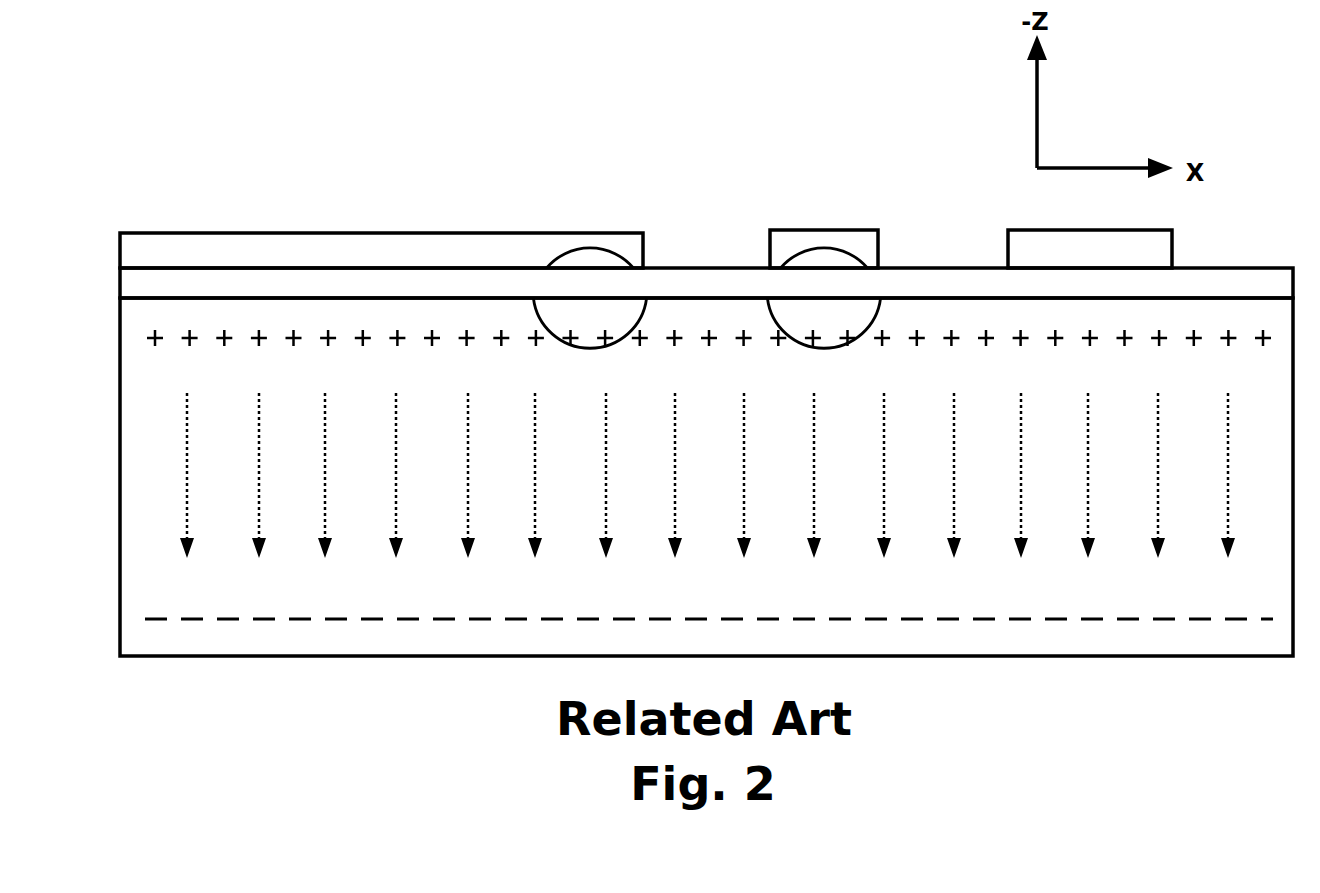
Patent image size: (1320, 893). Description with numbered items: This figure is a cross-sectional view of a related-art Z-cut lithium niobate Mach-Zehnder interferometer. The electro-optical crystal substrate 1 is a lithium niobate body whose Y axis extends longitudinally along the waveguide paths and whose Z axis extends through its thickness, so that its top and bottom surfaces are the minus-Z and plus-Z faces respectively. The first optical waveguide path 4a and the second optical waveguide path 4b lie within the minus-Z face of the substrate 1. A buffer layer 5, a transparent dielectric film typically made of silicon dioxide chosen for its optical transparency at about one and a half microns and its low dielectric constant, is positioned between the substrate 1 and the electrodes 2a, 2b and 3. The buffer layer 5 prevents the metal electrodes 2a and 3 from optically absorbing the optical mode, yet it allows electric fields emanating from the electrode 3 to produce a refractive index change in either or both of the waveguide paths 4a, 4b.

The electro-optical crystal substrate 1 is at (142, 410).
The electrode 2a is at (381, 250).
The electrode 2b is at (1090, 249).
The electrode 3 is at (824, 249).
The first optical waveguide path 4a is at (589, 298).
The second optical waveguide path 4b is at (823, 298).
The buffer layer 5 is at (706, 238).